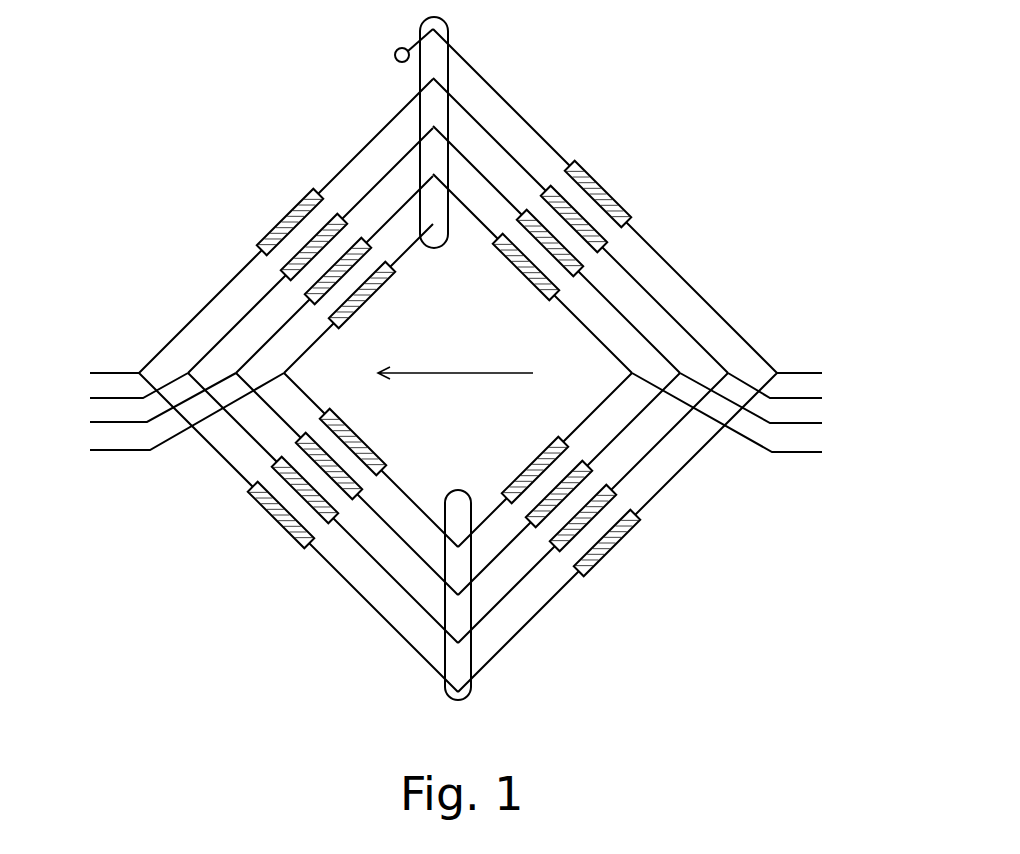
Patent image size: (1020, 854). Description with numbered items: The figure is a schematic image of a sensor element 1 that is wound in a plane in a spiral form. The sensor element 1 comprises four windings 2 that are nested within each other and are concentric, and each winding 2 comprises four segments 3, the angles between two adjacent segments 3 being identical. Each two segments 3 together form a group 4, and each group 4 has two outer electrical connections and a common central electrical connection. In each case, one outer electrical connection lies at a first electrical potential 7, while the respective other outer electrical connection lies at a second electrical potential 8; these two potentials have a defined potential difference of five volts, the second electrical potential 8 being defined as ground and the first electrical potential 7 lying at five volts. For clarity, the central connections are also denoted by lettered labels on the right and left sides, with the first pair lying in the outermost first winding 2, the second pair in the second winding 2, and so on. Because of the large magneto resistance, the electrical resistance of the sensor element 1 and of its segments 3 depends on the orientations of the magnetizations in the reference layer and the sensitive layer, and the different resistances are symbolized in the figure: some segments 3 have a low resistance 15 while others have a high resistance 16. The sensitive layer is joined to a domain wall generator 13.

The sensor element 1 is at (462, 367).
The winding 2 is at (285, 375).
The segment 3 is at (189, 323).
The group 4 is at (370, 141).
The first electrical potential 7 is at (443, 45).
The second electrical potential 8 is at (457, 661).
The domain wall generator 13 is at (395, 52).
The low resistance 15 is at (344, 262).
The high resistance 16 is at (300, 520).